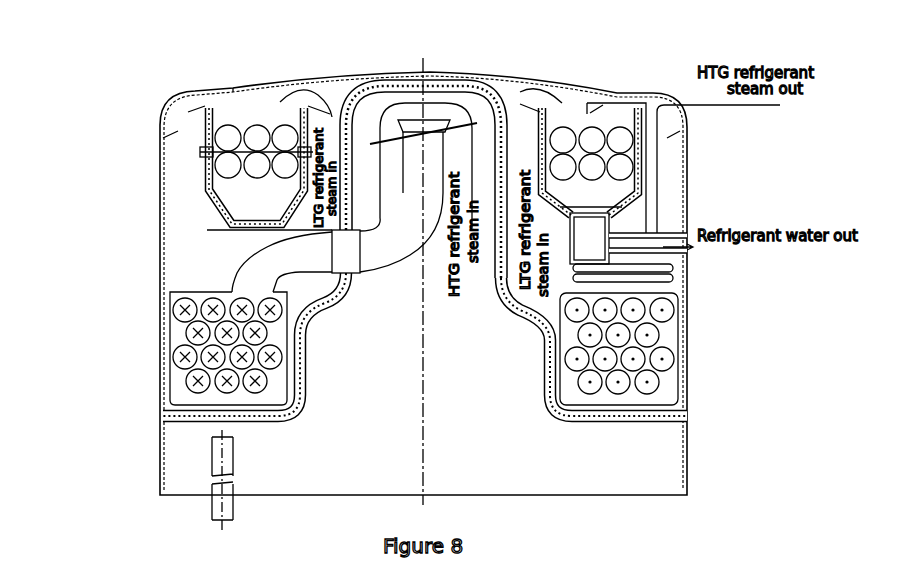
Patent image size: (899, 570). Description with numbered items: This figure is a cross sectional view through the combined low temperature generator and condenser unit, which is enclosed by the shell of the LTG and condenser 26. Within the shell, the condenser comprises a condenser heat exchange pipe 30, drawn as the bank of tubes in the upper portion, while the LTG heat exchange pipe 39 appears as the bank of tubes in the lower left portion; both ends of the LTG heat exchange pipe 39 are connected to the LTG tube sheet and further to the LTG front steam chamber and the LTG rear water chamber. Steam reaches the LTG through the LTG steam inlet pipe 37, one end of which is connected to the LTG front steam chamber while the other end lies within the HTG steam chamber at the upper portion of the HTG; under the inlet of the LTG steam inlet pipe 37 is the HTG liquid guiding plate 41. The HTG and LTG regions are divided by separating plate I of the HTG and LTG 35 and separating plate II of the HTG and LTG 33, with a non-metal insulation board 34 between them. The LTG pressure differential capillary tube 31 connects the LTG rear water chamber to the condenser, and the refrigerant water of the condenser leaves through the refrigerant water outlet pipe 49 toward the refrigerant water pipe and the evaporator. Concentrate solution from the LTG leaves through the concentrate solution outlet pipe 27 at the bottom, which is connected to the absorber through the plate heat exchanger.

The shell of the LTG and condenser 26 is at (160, 160).
The concentrate solution outlet pipe 27 is at (217, 467).
The condenser heat exchange pipe 30 is at (235, 137).
The LTG pressure differential capillary tube 31 is at (662, 311).
The separating plate II of the HTG and LTG 33 is at (190, 403).
The non-metal insulation board 34 is at (393, 333).
The separating plate I of the HTG and LTG 35 is at (647, 412).
The LTG steam inlet pipe 37 is at (268, 298).
The LTG heat exchange pipe 39 is at (168, 293).
The HTG liquid guiding plate 41 is at (387, 141).
The refrigerant water outlet pipe 49 is at (667, 260).